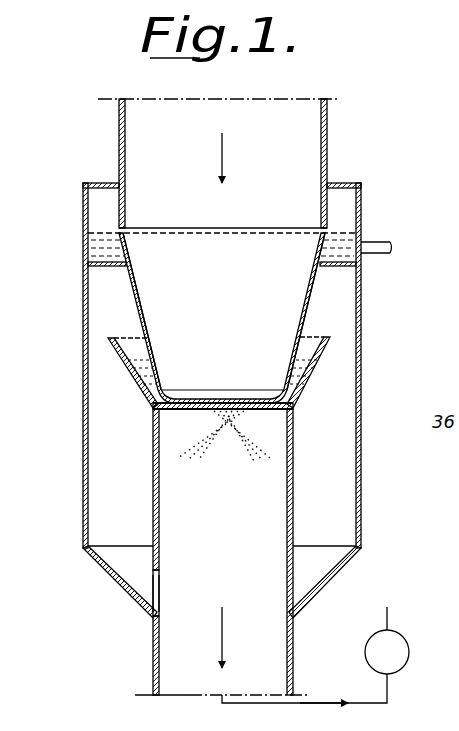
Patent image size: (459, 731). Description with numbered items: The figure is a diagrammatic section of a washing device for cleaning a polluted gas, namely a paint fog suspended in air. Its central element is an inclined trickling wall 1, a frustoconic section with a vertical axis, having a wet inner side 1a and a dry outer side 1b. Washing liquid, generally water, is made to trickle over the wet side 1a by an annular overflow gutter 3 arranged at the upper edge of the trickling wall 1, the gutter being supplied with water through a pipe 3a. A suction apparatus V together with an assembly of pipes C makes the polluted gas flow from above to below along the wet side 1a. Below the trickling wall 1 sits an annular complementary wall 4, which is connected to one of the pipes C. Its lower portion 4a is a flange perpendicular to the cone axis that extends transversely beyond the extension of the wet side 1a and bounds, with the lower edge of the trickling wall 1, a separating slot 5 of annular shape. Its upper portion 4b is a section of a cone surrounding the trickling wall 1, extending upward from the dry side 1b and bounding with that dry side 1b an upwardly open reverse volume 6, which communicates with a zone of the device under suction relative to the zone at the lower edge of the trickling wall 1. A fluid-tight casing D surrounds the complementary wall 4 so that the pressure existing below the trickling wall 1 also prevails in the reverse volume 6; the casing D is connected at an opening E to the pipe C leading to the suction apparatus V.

The inclined trickling wall 1 is at (135, 301).
The wet side 1a is at (329, 300).
The dry side 1b is at (319, 311).
The overflow gutter 3 is at (95, 240).
The pipe 3a is at (372, 247).
The complementary wall 4 is at (118, 368).
The lower portion 4a is at (166, 410).
The upper portion 4b is at (312, 366).
The separating slot 5 is at (297, 404).
The reverse volume 6 is at (146, 378).
The assembly of pipes C is at (328, 138).
The fluid-tight casing D is at (361, 527).
The outlet opening E is at (288, 583).
The suction apparatus V is at (315, 655).